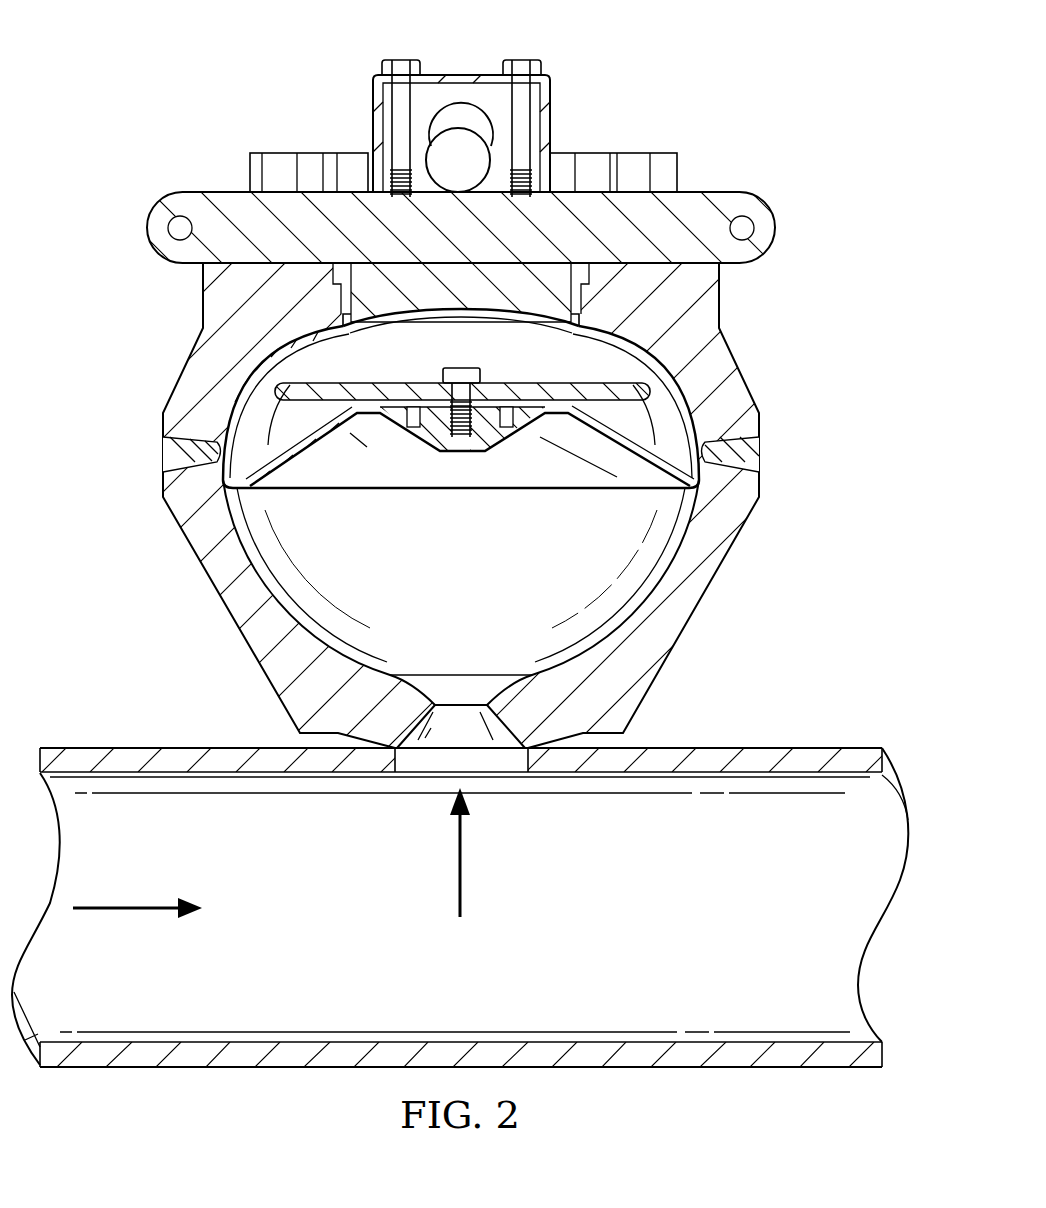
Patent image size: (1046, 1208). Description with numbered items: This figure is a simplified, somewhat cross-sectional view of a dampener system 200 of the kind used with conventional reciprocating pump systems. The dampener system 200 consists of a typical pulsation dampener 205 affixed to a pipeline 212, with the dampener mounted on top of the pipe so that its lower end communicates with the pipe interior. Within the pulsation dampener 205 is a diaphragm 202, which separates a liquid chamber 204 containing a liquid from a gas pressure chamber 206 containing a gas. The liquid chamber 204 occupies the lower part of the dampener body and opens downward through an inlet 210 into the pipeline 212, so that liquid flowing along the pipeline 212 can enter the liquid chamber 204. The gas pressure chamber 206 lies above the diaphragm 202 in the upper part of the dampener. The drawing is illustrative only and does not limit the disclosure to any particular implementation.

The dampener system 200 is at (523, 380).
The diaphragm 202 is at (327, 433).
The liquid chamber 204 is at (483, 625).
The pulsation dampener 205 is at (170, 510).
The gas pressure chamber 206 is at (537, 355).
The inlet 210 is at (480, 750).
The pipeline 212 is at (133, 757).